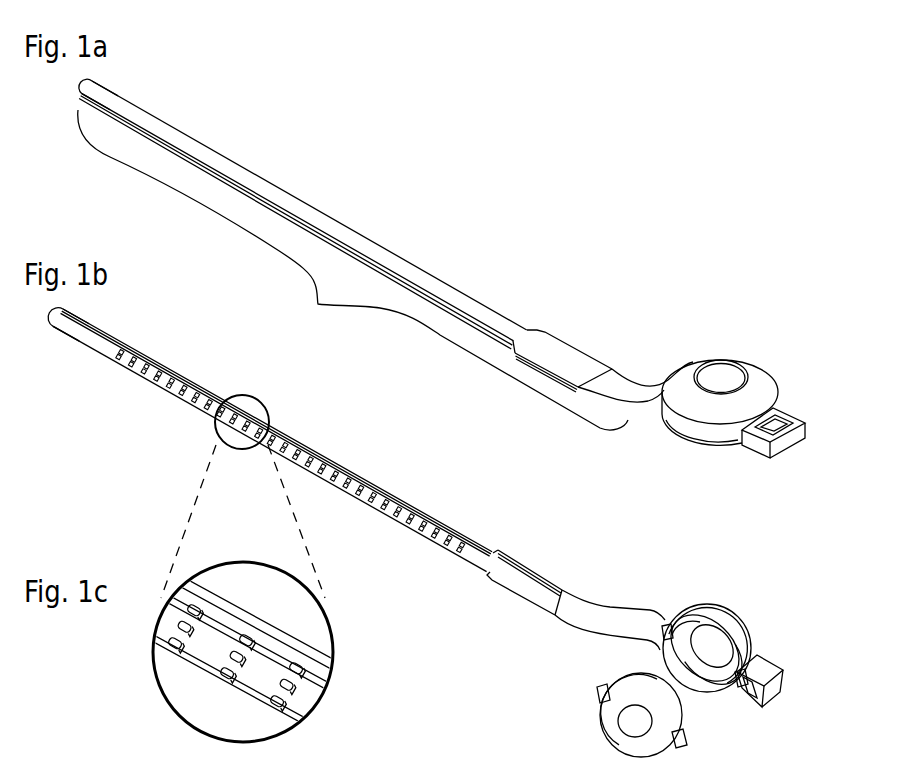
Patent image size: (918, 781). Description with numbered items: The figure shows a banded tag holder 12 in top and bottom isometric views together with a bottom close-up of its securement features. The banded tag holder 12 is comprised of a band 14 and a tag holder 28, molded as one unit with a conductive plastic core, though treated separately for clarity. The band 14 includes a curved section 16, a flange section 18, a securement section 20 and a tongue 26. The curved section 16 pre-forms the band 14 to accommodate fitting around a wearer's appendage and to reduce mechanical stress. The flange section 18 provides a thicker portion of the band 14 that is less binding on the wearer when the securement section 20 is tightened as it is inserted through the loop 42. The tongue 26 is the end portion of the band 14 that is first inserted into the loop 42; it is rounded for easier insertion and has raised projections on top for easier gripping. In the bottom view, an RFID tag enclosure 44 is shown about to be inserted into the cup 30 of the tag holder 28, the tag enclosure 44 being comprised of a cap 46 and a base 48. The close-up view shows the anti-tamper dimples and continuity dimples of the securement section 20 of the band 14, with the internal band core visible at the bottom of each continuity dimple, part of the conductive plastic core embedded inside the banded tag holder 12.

In FIG. 1A, the banded tag holder 12 is at (437, 185).
In FIG. 1A, the band 14 is at (353, 270).
In FIG. 1B, the band 14 is at (637, 618).
In FIG. 1A, the curved section 16 is at (660, 372).
In FIG. 1A, the flange section 18 is at (580, 356).
In FIG. 1B, the flange section 18 is at (540, 569).
In FIG. 1A, the securement section 20 is at (440, 268).
In FIG. 1B, the securement section 20 is at (327, 449).
In FIG. 1C, the securement section 20 is at (265, 658).
In FIG. 1A, the tongue 26 is at (116, 83).
In FIG. 1B, the tongue 26 is at (77, 345).
In FIG. 1A, the tag holder 28 is at (725, 358).
In FIG. 1B, the tag holder 28 is at (718, 592).
In FIG. 1B, the cup 30 is at (715, 666).
In FIG. 1A, the loop 42 is at (799, 418).
In FIG. 1B, the loop 42 is at (770, 664).
In FIG. 1B, the tag enclosure 44 is at (583, 677).
In FIG. 1B, the cap 46 is at (688, 716).
In FIG. 1B, the base 48 is at (601, 733).